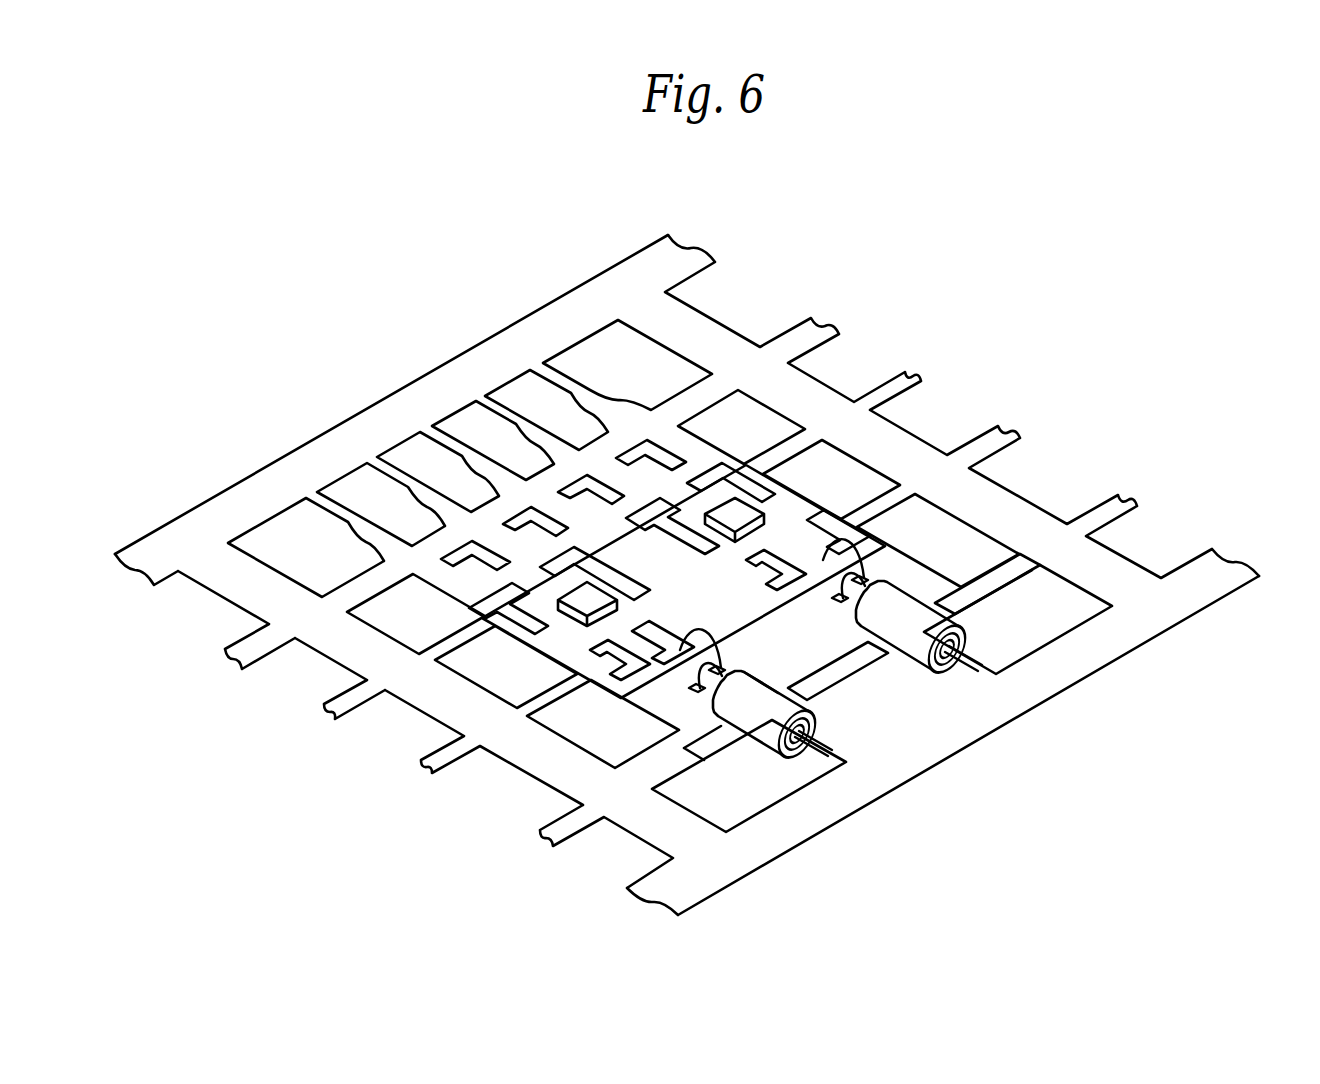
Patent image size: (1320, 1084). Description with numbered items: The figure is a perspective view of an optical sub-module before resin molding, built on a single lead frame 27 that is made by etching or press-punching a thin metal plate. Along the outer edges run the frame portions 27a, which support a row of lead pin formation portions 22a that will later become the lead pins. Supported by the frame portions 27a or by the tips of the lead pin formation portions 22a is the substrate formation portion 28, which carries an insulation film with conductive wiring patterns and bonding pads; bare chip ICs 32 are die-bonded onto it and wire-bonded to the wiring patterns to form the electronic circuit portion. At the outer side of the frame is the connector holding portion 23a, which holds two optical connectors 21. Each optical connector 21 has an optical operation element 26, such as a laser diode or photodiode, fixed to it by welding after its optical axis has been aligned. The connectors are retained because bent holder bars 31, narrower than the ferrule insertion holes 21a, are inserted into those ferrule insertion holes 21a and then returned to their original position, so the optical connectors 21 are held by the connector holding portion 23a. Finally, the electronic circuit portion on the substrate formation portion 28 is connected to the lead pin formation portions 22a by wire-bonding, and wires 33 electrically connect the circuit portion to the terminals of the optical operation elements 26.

The optical connector 21 is at (957, 619).
The ferrule insertion hole 21a is at (968, 647).
The lead pin formation portion 22a is at (545, 441).
The connector holding portion 23a is at (994, 571).
The optical operation element 26 is at (757, 673).
The lead frame 27 is at (421, 358).
The frame portion 27a is at (262, 479).
The substrate formation portion 28 is at (777, 507).
The holder bar 31 is at (967, 670).
The bare chip IC 32 is at (600, 598).
The wire 33 is at (872, 567).